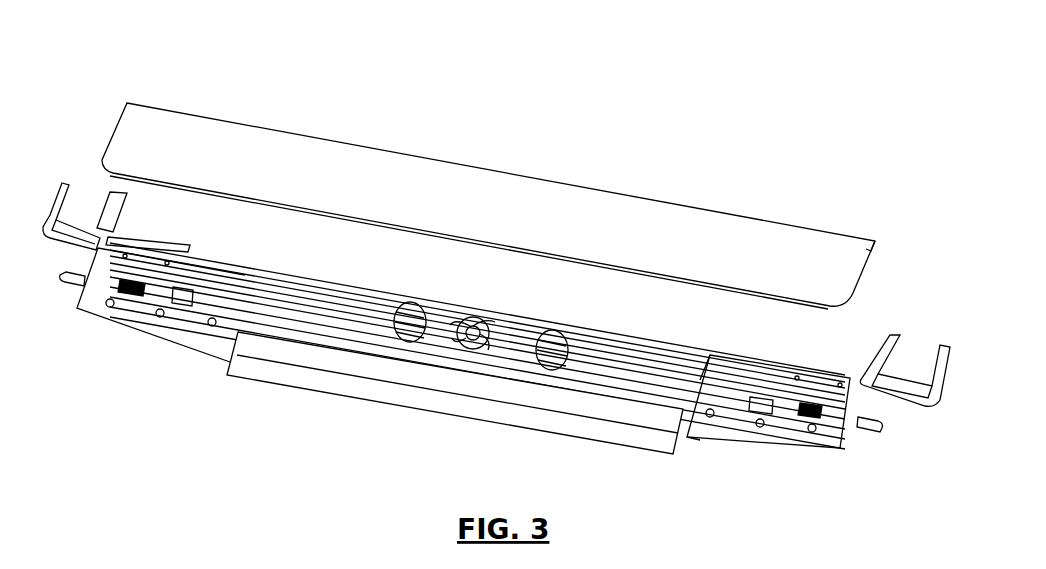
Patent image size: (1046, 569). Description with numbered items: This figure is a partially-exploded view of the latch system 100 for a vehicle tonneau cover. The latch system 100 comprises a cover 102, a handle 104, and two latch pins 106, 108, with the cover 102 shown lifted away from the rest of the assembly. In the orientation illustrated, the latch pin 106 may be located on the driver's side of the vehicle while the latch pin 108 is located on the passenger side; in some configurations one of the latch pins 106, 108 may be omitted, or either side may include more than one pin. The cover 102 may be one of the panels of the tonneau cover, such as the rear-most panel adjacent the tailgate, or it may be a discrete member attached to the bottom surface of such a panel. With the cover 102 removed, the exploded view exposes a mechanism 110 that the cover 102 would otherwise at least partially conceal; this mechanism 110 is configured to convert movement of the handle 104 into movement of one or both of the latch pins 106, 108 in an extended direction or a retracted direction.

The latch system 100 is at (270, 58).
The cover 102 is at (527, 205).
The handle 104 is at (260, 370).
The latch pin 106 is at (62, 283).
The latch pin 108 is at (873, 433).
The mechanism 110 is at (522, 312).